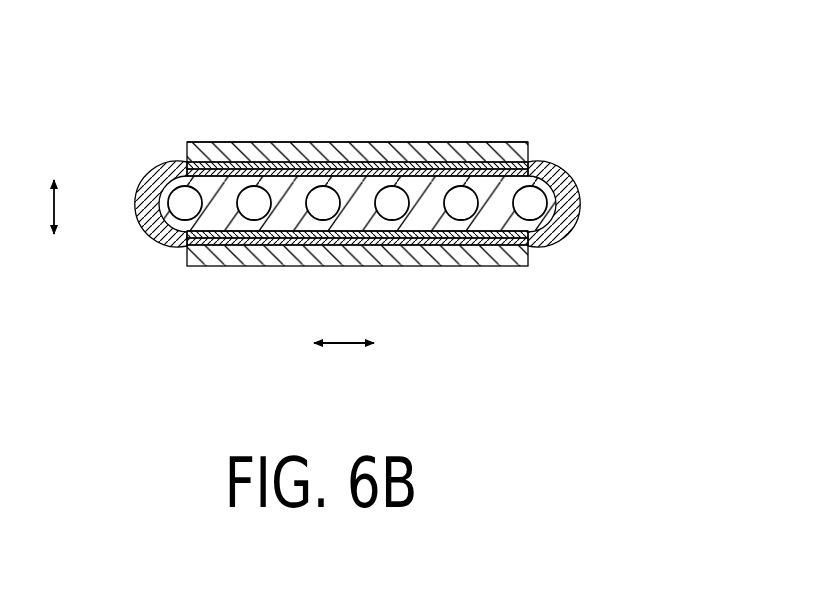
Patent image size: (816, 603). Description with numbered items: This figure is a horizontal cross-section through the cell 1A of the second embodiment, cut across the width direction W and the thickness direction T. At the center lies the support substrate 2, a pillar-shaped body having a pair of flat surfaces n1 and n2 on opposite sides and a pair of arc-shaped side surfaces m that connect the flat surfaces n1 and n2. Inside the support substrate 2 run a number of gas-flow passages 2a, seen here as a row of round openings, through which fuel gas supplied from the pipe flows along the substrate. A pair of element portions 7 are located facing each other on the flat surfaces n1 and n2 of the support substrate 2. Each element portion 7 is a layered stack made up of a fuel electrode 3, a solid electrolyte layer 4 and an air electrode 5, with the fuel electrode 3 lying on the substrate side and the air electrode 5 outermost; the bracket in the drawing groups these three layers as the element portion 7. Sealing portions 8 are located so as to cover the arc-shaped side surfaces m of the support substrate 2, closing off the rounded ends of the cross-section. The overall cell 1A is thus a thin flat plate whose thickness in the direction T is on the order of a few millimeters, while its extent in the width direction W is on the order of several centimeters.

The cell 1A is at (357, 205).
The support substrate 2 is at (226, 142).
The gas-flow passage 2a is at (318, 183).
The flat surface n2 is at (348, 166).
The flat surface n1 is at (350, 249).
The fuel electrode 3 is at (500, 310).
The solid electrolyte layer 4 is at (462, 245).
The air electrode 5 is at (494, 237).
The element portion 7 is at (357, 292).
The sealing portion 8 is at (150, 164).
The side surface m is at (136, 200).
The thickness direction T is at (38, 207).
The width direction W is at (344, 365).